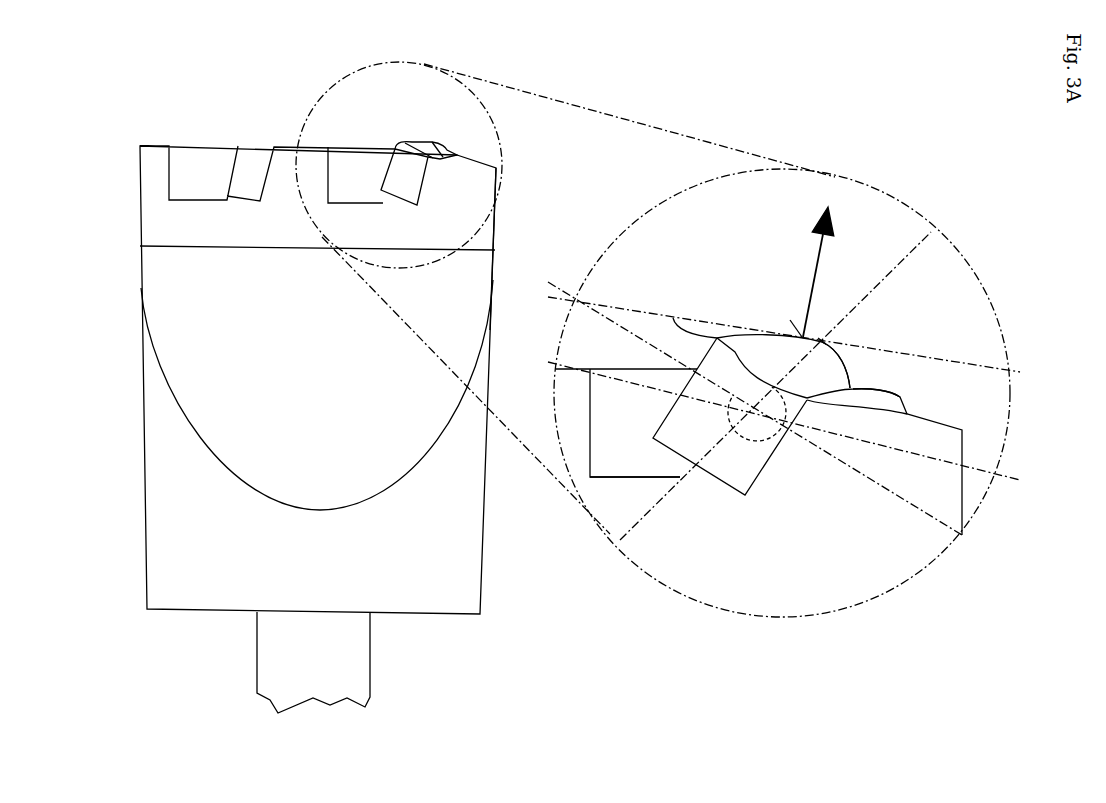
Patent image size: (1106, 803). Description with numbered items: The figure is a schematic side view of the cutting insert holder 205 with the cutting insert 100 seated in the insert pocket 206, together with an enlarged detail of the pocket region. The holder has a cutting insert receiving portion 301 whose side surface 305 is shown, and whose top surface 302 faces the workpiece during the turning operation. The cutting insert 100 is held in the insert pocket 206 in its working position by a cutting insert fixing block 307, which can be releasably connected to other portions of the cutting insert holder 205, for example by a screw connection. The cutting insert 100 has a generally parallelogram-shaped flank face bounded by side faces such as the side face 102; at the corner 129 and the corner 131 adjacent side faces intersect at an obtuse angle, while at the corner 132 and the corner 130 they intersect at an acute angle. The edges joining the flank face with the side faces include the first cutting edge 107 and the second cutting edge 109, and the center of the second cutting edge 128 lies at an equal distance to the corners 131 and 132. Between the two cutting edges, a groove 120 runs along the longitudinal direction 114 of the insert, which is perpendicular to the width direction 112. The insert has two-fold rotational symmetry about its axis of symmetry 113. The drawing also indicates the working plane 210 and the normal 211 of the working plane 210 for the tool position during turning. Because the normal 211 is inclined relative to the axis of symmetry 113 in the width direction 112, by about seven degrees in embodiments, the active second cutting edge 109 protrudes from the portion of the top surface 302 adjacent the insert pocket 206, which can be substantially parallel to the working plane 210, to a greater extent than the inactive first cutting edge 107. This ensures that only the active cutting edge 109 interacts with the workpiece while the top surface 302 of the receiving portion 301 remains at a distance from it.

The cutting insert holder 205 is at (139, 183).
The side surface 305 is at (228, 234).
The cutting insert receiving portion 301 is at (489, 238).
The cutting insert 100 is at (404, 144).
The cutting insert fixing block 307 is at (597, 420).
The side face 102 is at (760, 467).
The corner 129 is at (790, 428).
The second cutting edge 109 is at (733, 335).
The corner 132 is at (673, 318).
The center of the second cutting edge 128 is at (790, 320).
The corner 131 is at (822, 338).
The groove 120 is at (850, 344).
The first cutting edge 107 is at (878, 400).
The corner 130 is at (907, 397).
The top surface 302 is at (928, 416).
The width direction 112 is at (910, 507).
The working plane 210 is at (618, 310).
The longitudinal direction 114 is at (977, 468).
The axis of symmetry 113 is at (902, 262).
The insert pocket 206 is at (648, 485).
The normal of the working plane 211 is at (815, 255).